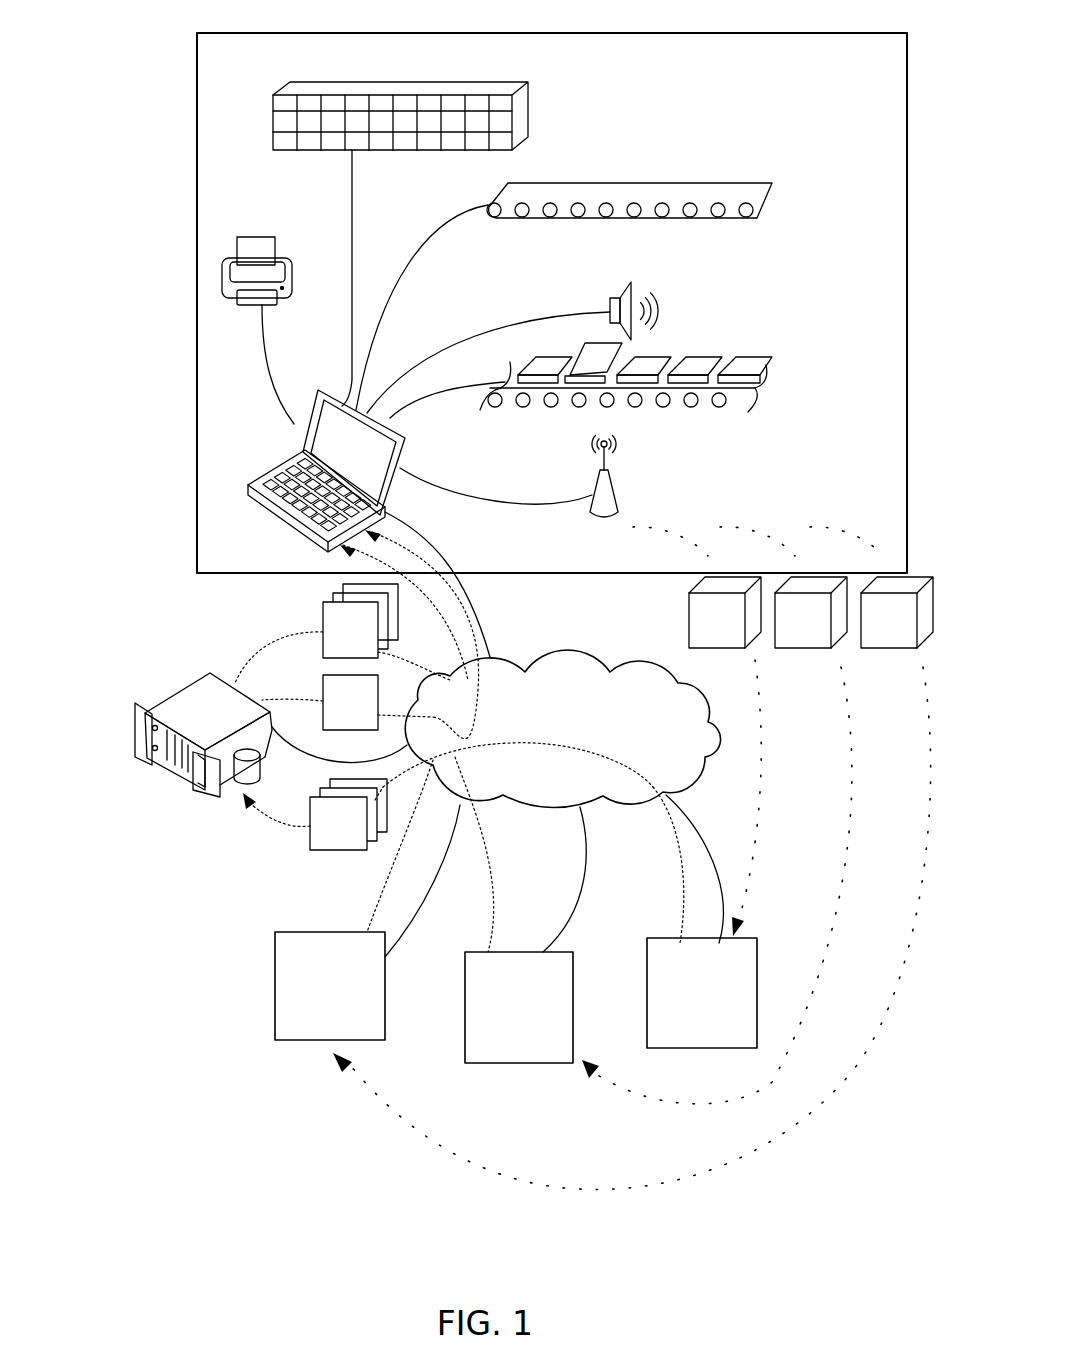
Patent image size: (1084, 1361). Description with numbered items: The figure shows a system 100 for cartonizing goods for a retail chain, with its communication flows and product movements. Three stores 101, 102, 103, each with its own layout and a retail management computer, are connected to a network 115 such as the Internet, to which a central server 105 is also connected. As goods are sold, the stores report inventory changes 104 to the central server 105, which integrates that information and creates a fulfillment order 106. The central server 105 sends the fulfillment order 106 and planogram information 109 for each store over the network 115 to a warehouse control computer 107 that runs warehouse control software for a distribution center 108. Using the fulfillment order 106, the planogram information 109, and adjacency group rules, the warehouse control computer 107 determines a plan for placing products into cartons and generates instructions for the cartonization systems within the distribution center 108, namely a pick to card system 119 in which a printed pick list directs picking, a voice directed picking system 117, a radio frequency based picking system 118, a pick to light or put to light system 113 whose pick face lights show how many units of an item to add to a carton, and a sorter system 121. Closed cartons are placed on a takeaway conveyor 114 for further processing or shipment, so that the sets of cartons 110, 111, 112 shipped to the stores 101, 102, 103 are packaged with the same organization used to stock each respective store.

The system 100 is at (118, 107).
The store 101 is at (330, 986).
The store 102 is at (519, 1007).
The store 103 is at (702, 993).
The inventory changes 104 is at (315, 814).
The central server 105 is at (197, 785).
The fulfillment order 106 is at (347, 702).
The warehouse control computer 107 is at (277, 467).
The distribution center 108 is at (197, 245).
The planogram information 109 is at (342, 633).
The set of cartons 110 is at (633, 883).
The set of cartons 111 is at (717, 840).
The set of cartons 112 is at (725, 756).
The pick to light system 113 is at (527, 86).
The takeaway conveyor 114 is at (775, 187).
The network 115 is at (566, 648).
The voice directed picking system 117 is at (610, 298).
The radio frequency based picking system 118 is at (621, 483).
The pick to card system 119 is at (256, 218).
The sorter system 121 is at (699, 348).